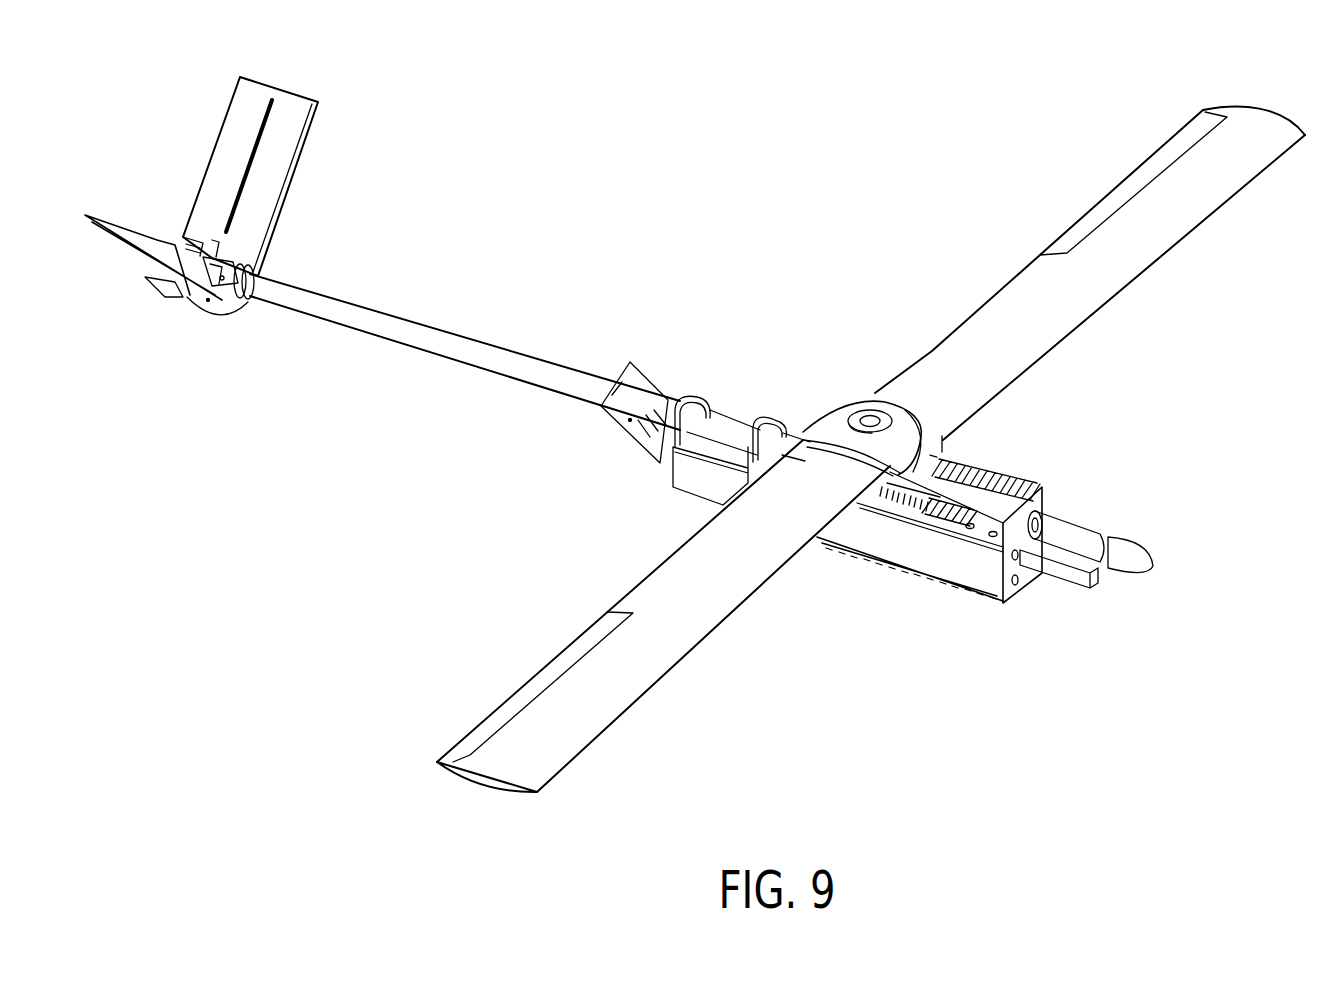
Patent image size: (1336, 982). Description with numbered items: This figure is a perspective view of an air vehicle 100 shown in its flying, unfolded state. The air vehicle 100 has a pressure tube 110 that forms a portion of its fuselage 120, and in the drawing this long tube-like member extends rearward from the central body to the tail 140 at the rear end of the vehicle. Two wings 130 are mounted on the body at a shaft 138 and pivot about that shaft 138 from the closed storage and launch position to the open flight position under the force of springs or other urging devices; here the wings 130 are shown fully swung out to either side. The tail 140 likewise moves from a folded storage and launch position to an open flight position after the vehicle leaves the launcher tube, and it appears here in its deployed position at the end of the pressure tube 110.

The air vehicle 100 is at (890, 196).
The tail 140 is at (180, 300).
The pressure tube 110 is at (465, 352).
The fuselage 120 is at (537, 372).
The shaft 138 is at (869, 419).
The wings 130 is at (1095, 302).